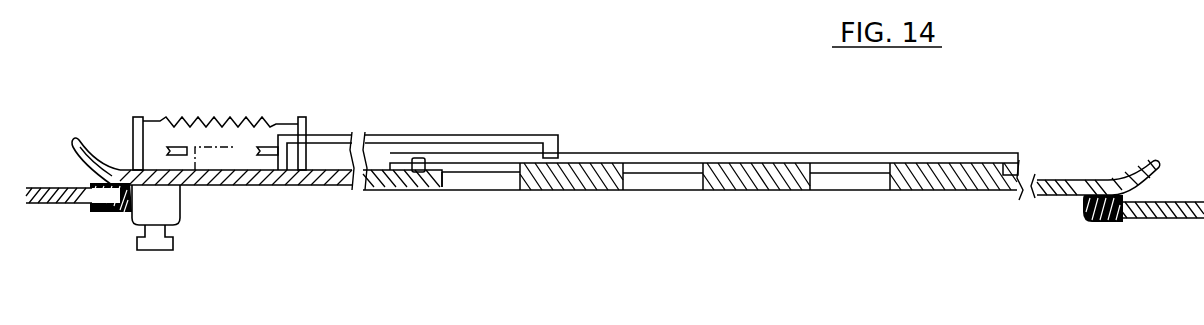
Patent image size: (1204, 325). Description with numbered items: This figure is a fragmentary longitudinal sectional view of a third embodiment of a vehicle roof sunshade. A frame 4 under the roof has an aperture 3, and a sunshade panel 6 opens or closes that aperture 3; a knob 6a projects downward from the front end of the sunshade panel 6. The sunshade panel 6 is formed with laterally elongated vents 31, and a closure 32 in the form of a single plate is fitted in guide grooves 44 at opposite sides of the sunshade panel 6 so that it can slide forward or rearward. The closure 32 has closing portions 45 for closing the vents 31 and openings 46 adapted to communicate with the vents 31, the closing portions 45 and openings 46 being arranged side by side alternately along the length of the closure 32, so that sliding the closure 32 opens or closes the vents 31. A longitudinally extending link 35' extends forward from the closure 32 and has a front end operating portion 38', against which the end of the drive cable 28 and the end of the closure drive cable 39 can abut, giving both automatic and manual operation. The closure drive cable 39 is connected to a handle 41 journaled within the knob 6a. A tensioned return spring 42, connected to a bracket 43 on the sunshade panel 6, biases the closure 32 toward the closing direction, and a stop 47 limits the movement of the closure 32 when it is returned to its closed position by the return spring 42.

The aperture 3 is at (1084, 212).
The frame 4 is at (52, 205).
The sunshade panel 6 is at (295, 187).
The knob 6a is at (147, 210).
The drive cable 28 is at (262, 146).
The vents 31 is at (520, 175).
The closure 32 is at (706, 136).
The link 35' is at (461, 115).
The operating portion 38' is at (315, 178).
The closure drive cable 39 is at (171, 146).
The handle 41 is at (167, 241).
The return spring 42 is at (208, 123).
The bracket 43 is at (135, 148).
The guide grooves 44 is at (1005, 160).
The closing portions 45 is at (583, 166).
The openings 46 is at (687, 163).
The stop 47 is at (420, 173).